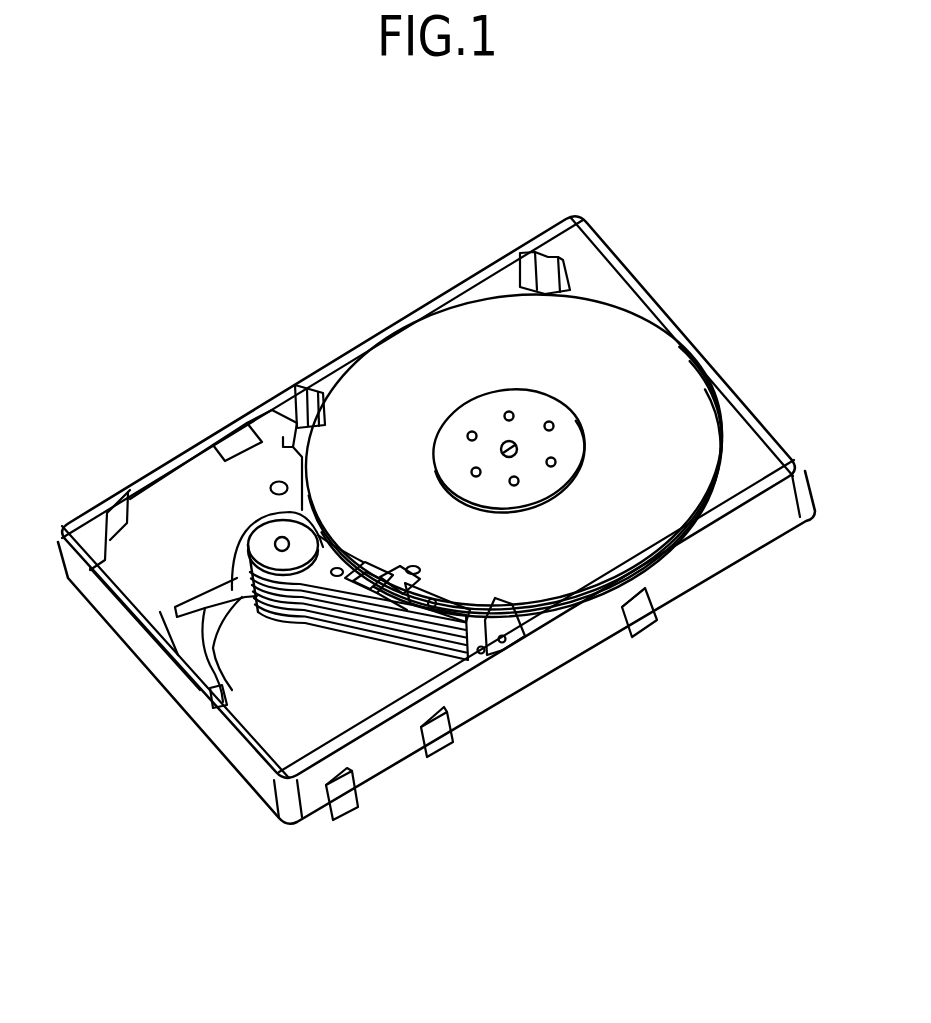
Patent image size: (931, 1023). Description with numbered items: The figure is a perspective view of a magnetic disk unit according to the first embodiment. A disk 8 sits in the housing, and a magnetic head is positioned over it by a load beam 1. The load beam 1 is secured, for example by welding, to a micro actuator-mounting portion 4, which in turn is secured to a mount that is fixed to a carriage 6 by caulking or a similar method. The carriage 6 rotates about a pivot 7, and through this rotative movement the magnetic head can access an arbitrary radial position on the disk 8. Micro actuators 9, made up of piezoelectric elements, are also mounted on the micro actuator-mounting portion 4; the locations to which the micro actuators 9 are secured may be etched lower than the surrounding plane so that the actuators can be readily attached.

The load beam 1 is at (443, 610).
The micro actuator-mounting portion 4 is at (358, 605).
The carriage 6 is at (195, 705).
The pivot 7 is at (280, 543).
The disk 8 is at (632, 387).
The micro actuators 9 is at (410, 573).